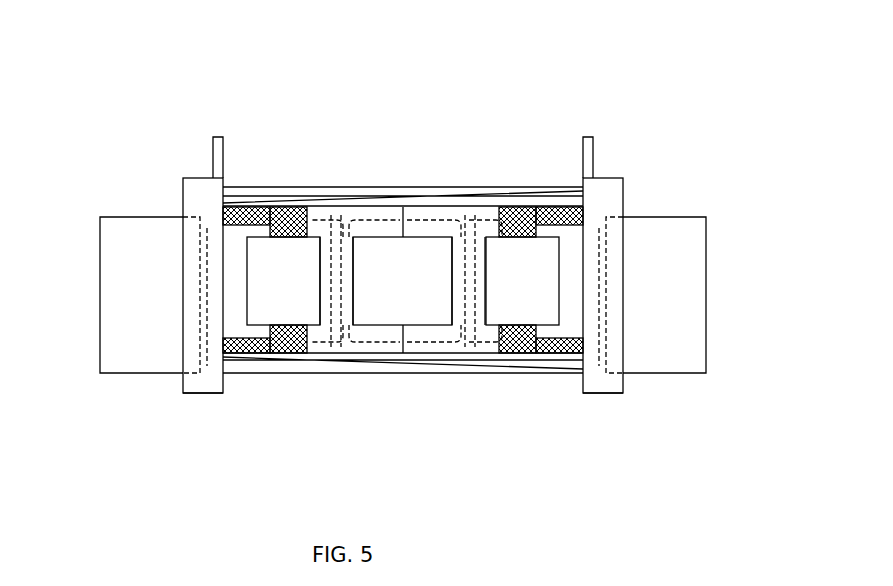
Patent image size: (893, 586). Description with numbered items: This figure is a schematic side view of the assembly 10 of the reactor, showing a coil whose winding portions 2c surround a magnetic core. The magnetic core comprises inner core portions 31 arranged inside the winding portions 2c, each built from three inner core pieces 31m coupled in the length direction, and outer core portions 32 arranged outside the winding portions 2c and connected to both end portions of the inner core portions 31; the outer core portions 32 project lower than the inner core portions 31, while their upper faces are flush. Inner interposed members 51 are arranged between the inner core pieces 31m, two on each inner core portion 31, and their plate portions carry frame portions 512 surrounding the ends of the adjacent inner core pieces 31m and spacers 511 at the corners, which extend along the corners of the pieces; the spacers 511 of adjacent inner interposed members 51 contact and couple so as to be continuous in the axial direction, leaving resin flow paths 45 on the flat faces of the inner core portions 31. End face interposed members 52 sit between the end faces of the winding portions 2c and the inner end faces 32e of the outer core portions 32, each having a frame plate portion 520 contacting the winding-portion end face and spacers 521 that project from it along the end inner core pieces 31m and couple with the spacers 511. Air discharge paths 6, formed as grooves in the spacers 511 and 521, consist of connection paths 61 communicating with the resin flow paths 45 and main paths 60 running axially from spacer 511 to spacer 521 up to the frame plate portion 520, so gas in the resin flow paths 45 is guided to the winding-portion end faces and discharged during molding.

The assembly 10 is at (112, 78).
The winding portion 2c is at (215, 193).
The air discharge path 6 is at (403, 315).
The main path 60 is at (262, 355).
The connection path 61 is at (291, 355).
The inner core portion 31 is at (403, 207).
The inner core piece 31m is at (520, 110).
The outer core portion 32 is at (100, 262).
The inner end face 32e is at (187, 373).
The resin flow path 45 is at (418, 352).
The inner interposed member 51 is at (346, 222).
The spacer 511 is at (280, 210).
The frame portion 512 is at (352, 355).
The end face interposed member 52 is at (180, 187).
The frame plate portion 520 is at (201, 395).
The spacer 521 is at (223, 197).